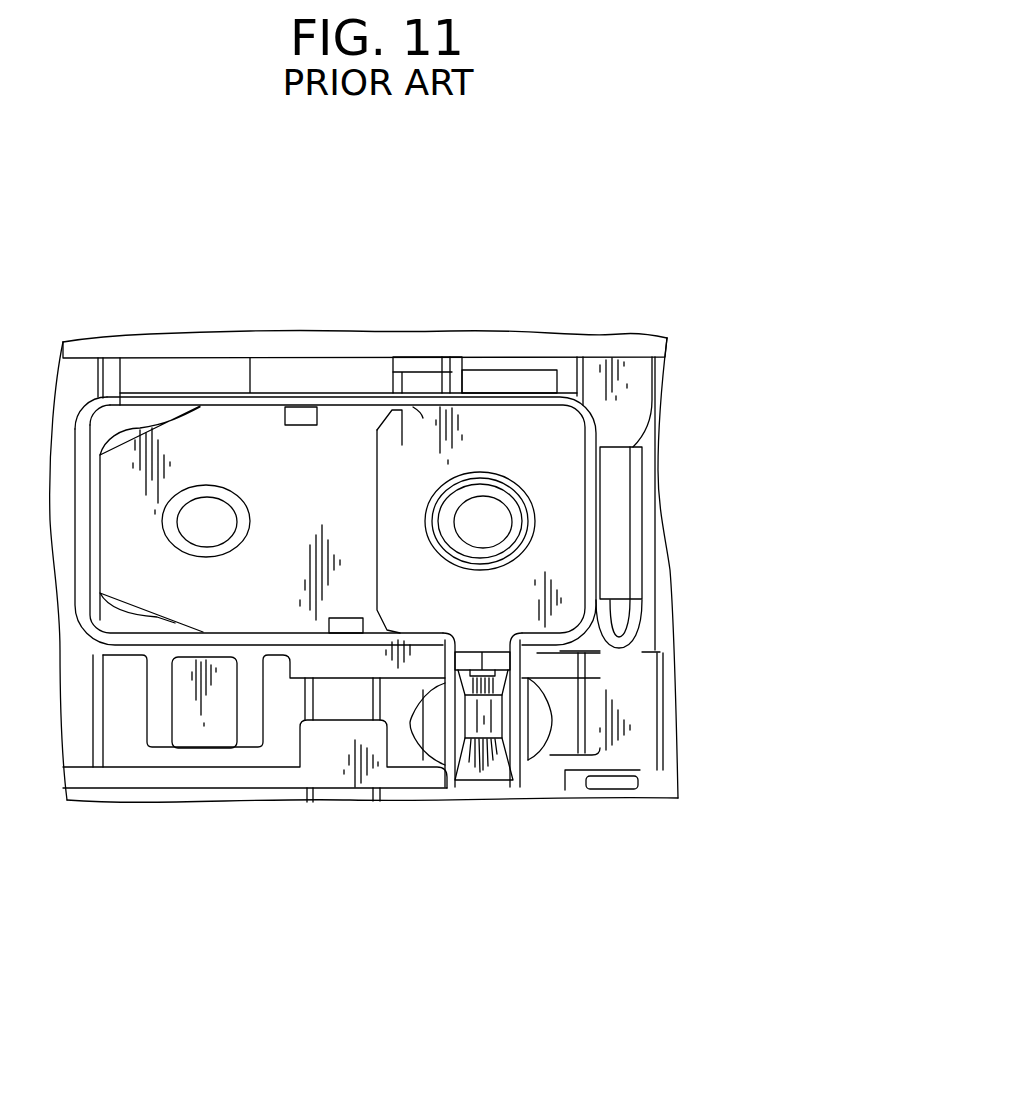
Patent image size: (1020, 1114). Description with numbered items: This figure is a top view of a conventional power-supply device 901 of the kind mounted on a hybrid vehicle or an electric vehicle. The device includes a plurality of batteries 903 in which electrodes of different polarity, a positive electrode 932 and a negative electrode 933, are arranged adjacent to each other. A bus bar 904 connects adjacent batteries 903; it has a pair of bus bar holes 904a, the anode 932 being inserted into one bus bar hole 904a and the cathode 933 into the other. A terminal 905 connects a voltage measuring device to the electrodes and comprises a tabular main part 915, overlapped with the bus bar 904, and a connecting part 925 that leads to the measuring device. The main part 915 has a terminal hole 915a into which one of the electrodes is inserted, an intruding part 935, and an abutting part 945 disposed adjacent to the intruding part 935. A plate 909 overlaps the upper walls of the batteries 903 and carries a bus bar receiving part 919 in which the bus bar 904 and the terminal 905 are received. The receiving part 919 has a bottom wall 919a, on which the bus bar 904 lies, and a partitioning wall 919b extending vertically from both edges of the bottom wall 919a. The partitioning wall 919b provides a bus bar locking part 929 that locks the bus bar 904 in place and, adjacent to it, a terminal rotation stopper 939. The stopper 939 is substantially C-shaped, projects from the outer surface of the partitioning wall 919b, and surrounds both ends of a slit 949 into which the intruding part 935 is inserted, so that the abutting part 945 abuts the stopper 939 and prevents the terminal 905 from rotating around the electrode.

The power-supply device 901 is at (586, 252).
The battery 903 is at (640, 340).
The bus bar 904 is at (300, 555).
The bus bar hole 904a is at (234, 497).
The terminal 905 is at (658, 935).
The plate 909 is at (601, 645).
The main part 915 is at (563, 567).
The terminal hole 915a is at (534, 515).
The bus bar receiving part 919 is at (658, 1015).
The bottom wall 919a is at (128, 625).
The partitioning wall 919b is at (120, 403).
The connecting part 925 is at (473, 643).
The bus bar locking part 929 is at (302, 410).
The positive electrode 932 is at (215, 515).
The negative electrode 933 is at (490, 528).
The intruding part 935 is at (430, 385).
The terminal rotation stopper 939 is at (462, 372).
The abutting part 945 is at (402, 440).
The slit 949 is at (423, 418).